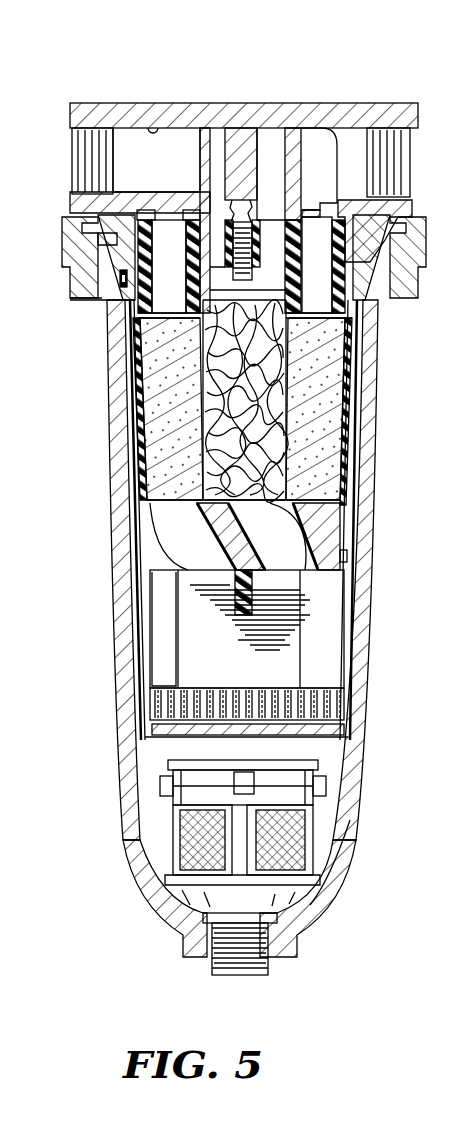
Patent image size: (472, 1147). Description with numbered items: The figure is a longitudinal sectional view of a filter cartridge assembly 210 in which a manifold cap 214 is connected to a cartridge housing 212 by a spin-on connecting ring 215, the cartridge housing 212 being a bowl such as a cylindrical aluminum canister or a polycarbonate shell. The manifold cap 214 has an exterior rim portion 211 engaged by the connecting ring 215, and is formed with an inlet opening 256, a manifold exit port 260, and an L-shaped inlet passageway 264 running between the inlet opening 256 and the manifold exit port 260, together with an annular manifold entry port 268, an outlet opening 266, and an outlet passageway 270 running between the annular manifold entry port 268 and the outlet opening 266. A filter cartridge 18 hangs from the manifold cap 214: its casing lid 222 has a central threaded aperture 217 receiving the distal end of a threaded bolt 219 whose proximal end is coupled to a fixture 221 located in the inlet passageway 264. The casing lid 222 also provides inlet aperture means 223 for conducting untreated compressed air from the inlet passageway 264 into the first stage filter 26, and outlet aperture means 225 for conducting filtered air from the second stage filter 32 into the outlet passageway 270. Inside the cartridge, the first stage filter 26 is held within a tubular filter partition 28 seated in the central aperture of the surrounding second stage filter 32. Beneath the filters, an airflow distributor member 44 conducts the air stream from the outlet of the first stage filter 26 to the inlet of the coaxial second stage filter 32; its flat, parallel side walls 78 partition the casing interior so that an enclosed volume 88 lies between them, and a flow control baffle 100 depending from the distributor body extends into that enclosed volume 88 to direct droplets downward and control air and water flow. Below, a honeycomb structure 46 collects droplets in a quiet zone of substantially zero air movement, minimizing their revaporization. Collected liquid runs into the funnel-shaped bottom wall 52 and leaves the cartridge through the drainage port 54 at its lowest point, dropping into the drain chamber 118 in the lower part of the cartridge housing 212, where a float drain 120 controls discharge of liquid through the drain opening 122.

The filter cartridge assembly 210 is at (89, 60).
The manifold cap 214 is at (144, 103).
The L-shaped inlet passageway 264 is at (155, 126).
The fixture 221 is at (232, 133).
The threaded bolt 219 is at (248, 132).
The outlet passageway 270 is at (306, 157).
The inlet opening 256 is at (110, 132).
The outlet opening 266 is at (398, 136).
The annular manifold entry port 268 is at (140, 217).
The manifold exit port 260 is at (208, 222).
The outlet aperture means 225 is at (166, 240).
The central threaded aperture 217 is at (243, 230).
The exterior rim portion 211 is at (88, 228).
The casing lid 222 is at (127, 268).
The spin-on connecting ring 215 is at (78, 303).
The inlet aperture means 223 is at (340, 322).
The tubular filter partition 28 is at (205, 462).
The second stage filter 32 is at (318, 440).
The first stage filter 26 is at (269, 464).
The airflow distributor member 44 is at (288, 584).
The flow control baffle 100 is at (252, 594).
The enclosed volume 88 is at (163, 636).
The side walls 78 is at (214, 667).
The honeycomb structure 46 is at (318, 708).
The drain chamber 118 is at (328, 753).
The drainage port 54 is at (188, 737).
The funnel-shaped bottom wall 52 is at (283, 733).
The filter cartridge 18 is at (152, 769).
The float drain 120 is at (322, 844).
The cartridge housing 212 is at (122, 862).
The drain opening 122 is at (263, 947).